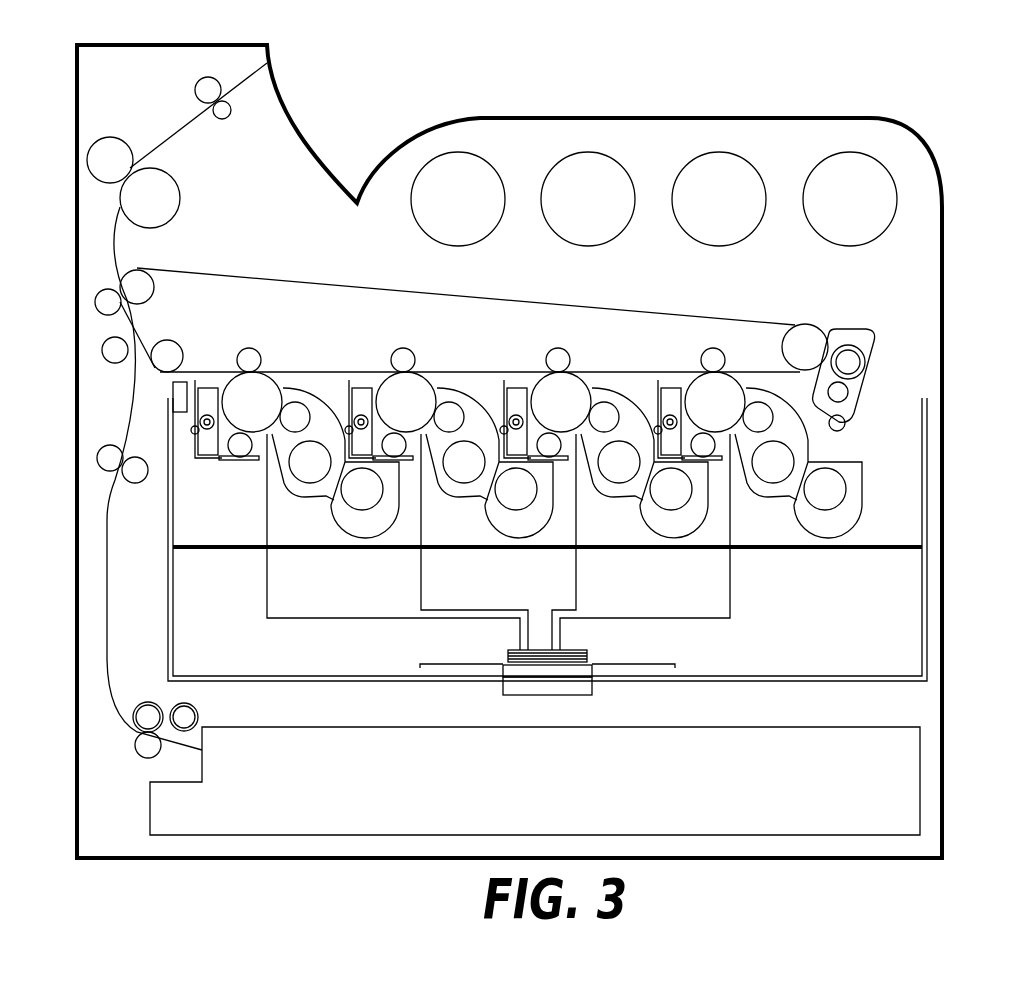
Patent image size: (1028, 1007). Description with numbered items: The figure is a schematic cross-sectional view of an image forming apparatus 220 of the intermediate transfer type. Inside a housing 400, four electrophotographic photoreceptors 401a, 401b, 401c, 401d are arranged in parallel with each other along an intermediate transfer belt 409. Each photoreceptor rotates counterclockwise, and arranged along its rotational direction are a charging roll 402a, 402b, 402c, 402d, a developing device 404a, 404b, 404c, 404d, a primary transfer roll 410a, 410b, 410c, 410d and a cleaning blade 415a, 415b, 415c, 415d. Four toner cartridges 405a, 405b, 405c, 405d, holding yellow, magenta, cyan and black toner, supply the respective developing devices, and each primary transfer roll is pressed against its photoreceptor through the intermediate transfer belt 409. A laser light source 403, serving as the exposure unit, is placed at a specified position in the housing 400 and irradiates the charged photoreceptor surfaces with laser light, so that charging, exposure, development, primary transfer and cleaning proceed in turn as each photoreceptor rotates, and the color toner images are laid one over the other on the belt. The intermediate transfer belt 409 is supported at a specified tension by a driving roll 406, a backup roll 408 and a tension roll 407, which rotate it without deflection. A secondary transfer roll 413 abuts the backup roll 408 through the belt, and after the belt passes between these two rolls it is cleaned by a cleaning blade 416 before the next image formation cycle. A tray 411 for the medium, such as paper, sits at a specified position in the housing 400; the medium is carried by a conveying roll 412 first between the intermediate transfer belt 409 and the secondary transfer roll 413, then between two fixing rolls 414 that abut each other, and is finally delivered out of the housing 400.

The image forming apparatus 220 is at (877, 91).
The housing 400 is at (943, 310).
The electrophotographic photoreceptor 401a is at (722, 378).
The electrophotographic photoreceptor 401b is at (585, 380).
The electrophotographic photoreceptor 401c is at (430, 380).
The electrophotographic photoreceptor 401d is at (276, 380).
The charging roll 402a is at (657, 467).
The charging roll 402b is at (497, 468).
The charging roll 402c is at (333, 492).
The charging roll 402d is at (218, 457).
The laser light source 403 is at (570, 651).
The developing device 404a is at (758, 498).
The developing device 404b is at (604, 498).
The developing device 404c is at (449, 498).
The developing device 404d is at (295, 498).
The toner cartridge 405a is at (862, 150).
The toner cartridge 405b is at (730, 150).
The toner cartridge 405c is at (600, 150).
The toner cartridge 405d is at (470, 150).
The driving roll 406 is at (805, 324).
The tension roll 407 is at (160, 340).
The backup roll 408 is at (123, 272).
The intermediate transfer belt 409 is at (250, 277).
The primary transfer roll 410a is at (716, 348).
The primary transfer roll 410b is at (561, 349).
The primary transfer roll 410c is at (406, 349).
The primary transfer roll 410d is at (252, 349).
The tray 411 is at (822, 728).
The conveying roll 412 is at (196, 88).
The secondary transfer roll 413 is at (96, 300).
The fixing rolls 414 is at (120, 207).
The cleaning blade 415a is at (680, 417).
The cleaning blade 415b is at (526, 417).
The cleaning blade 415c is at (371, 417).
The cleaning blade 415d is at (217, 417).
The cleaning blade 416 is at (852, 413).